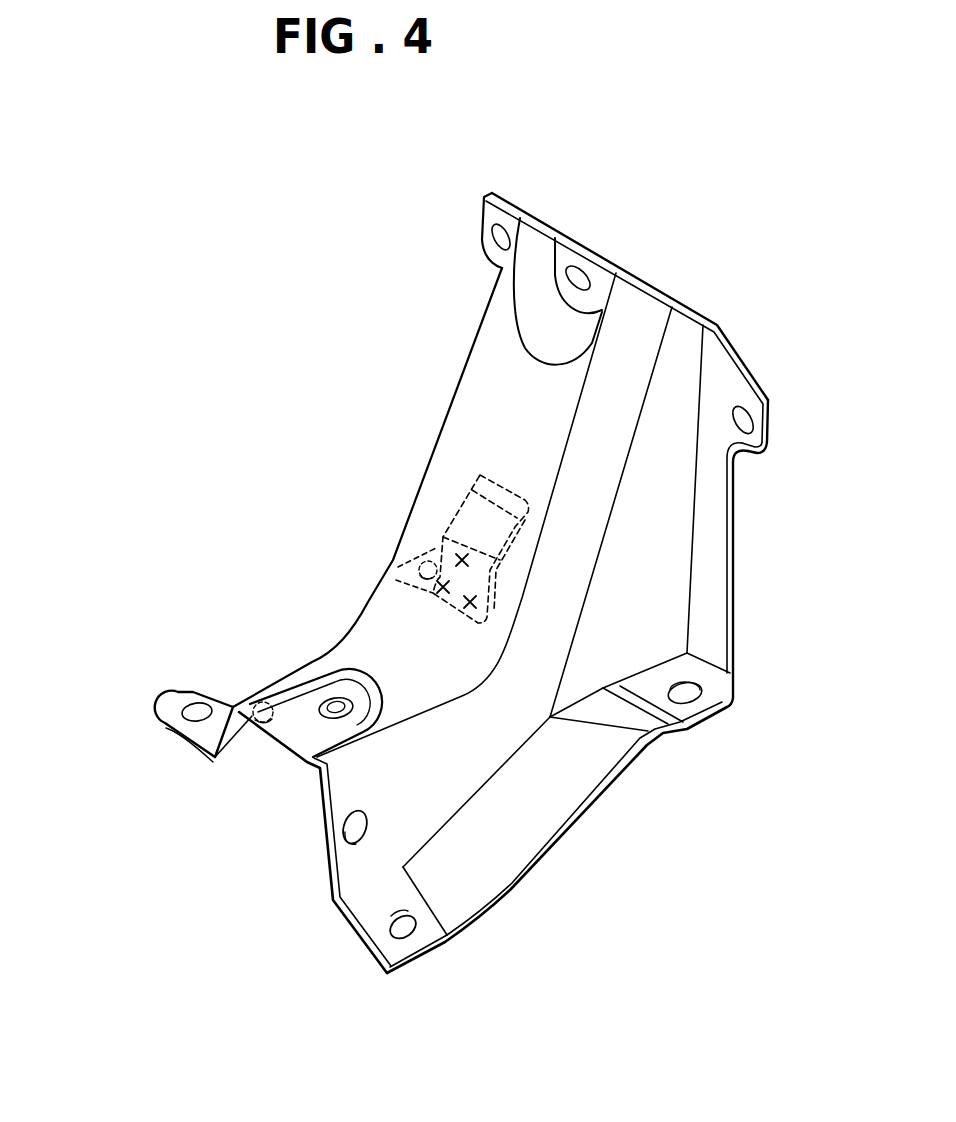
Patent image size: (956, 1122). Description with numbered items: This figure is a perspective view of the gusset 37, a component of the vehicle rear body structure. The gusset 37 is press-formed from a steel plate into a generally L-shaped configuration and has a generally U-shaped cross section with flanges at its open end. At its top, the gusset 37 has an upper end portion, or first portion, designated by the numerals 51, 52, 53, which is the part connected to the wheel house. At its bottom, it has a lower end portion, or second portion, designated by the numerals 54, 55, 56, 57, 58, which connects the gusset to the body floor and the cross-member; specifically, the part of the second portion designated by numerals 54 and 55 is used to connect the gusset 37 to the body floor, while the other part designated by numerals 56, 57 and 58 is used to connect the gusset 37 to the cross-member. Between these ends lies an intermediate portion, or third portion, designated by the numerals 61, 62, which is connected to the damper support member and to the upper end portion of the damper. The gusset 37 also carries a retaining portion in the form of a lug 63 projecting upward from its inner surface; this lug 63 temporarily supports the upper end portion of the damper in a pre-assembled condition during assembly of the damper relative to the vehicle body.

The gusset 37 is at (303, 258).
The upper end portion (first portion) 51 is at (505, 213).
The upper end portion (first portion) 52 is at (587, 264).
The upper end portion (first portion) 53 is at (742, 392).
The lower end portion (second portion) 54 is at (170, 722).
The lower end portion (second portion) 55 is at (378, 937).
The lower end portion (second portion) 56 is at (262, 724).
The lower end portion (second portion) 57 is at (347, 717).
The lower end portion (second portion) 58 is at (352, 843).
The intermediate portion (third portion) 61 is at (424, 553).
The intermediate portion (third portion) 62 is at (703, 673).
The lug 63 is at (517, 490).